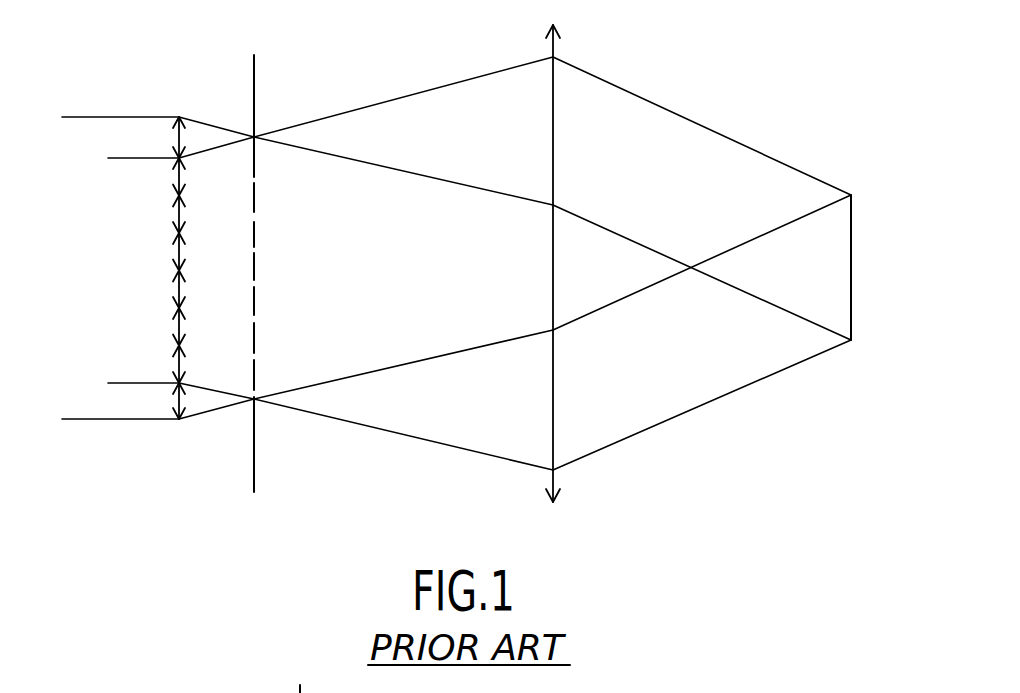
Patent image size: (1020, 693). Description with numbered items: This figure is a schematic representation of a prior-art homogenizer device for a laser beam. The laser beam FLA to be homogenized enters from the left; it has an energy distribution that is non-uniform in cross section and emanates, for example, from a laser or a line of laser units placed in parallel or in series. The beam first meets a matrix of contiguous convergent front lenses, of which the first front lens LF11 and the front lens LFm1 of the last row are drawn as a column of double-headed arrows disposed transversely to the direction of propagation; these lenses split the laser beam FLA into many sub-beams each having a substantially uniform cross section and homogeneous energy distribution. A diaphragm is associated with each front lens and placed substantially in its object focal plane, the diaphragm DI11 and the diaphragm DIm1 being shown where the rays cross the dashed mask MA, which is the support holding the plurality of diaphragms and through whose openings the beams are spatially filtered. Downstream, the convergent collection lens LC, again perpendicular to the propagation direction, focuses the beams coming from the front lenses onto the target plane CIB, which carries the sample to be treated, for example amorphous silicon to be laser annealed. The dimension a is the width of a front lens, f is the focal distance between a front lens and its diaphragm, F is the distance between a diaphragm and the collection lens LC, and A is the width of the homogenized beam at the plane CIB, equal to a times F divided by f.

The laser beam to be homogenized FLA is at (112, 419).
The front lens LF11 is at (177, 118).
The front lens LFm1 is at (182, 403).
The mask MA is at (256, 96).
The diaphragm DI11 is at (288, 182).
The diaphragm DIm1 is at (290, 455).
The collection lens LC is at (598, 16).
The target plane CIB is at (888, 345).
The width of a front lens a is at (155, 266).
The focal distance f is at (212, 102).
The distance between diaphragm and collection lens F is at (548, 81).
The width of the homogenized laser beam A is at (883, 244).